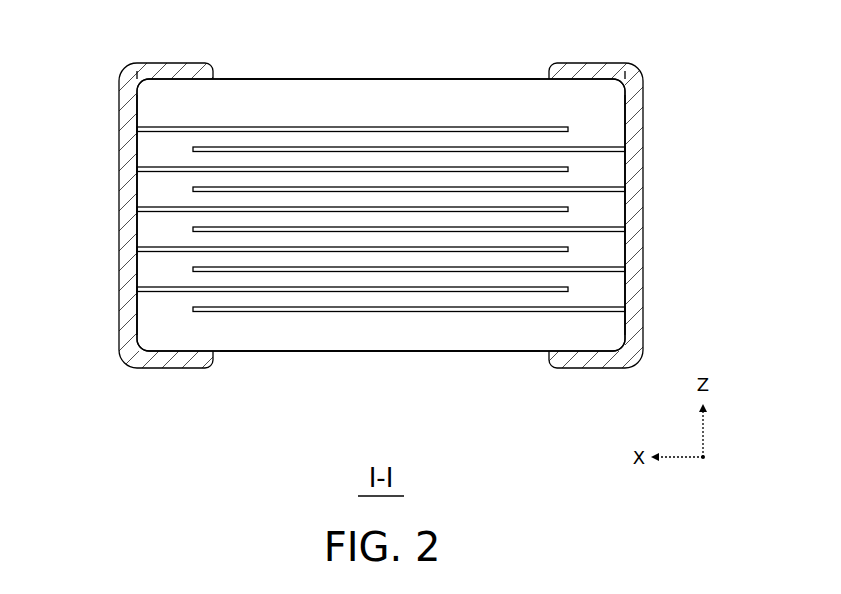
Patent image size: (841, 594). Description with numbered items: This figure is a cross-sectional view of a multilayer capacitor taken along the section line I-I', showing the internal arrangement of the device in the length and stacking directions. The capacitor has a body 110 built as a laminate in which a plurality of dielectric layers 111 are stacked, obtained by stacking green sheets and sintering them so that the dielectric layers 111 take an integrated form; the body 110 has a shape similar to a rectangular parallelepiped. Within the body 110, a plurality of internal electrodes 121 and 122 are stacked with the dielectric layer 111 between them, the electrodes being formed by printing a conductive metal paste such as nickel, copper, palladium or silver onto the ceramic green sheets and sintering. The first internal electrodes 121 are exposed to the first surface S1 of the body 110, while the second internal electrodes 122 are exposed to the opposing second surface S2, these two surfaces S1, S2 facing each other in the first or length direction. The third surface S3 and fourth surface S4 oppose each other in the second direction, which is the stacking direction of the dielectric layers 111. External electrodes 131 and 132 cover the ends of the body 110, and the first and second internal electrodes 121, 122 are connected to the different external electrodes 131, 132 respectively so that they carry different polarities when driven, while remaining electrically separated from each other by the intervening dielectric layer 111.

The body 110 is at (307, 77).
The dielectric layer 111 is at (197, 161).
The first internal electrode 121 is at (362, 126).
The second internal electrode 122 is at (418, 146).
The first external electrode 131 is at (172, 71).
The second external electrode 132 is at (588, 71).
The first surface S1 is at (135, 203).
The second surface S2 is at (628, 200).
The third surface S3 is at (468, 77).
The fourth surface S4 is at (470, 354).